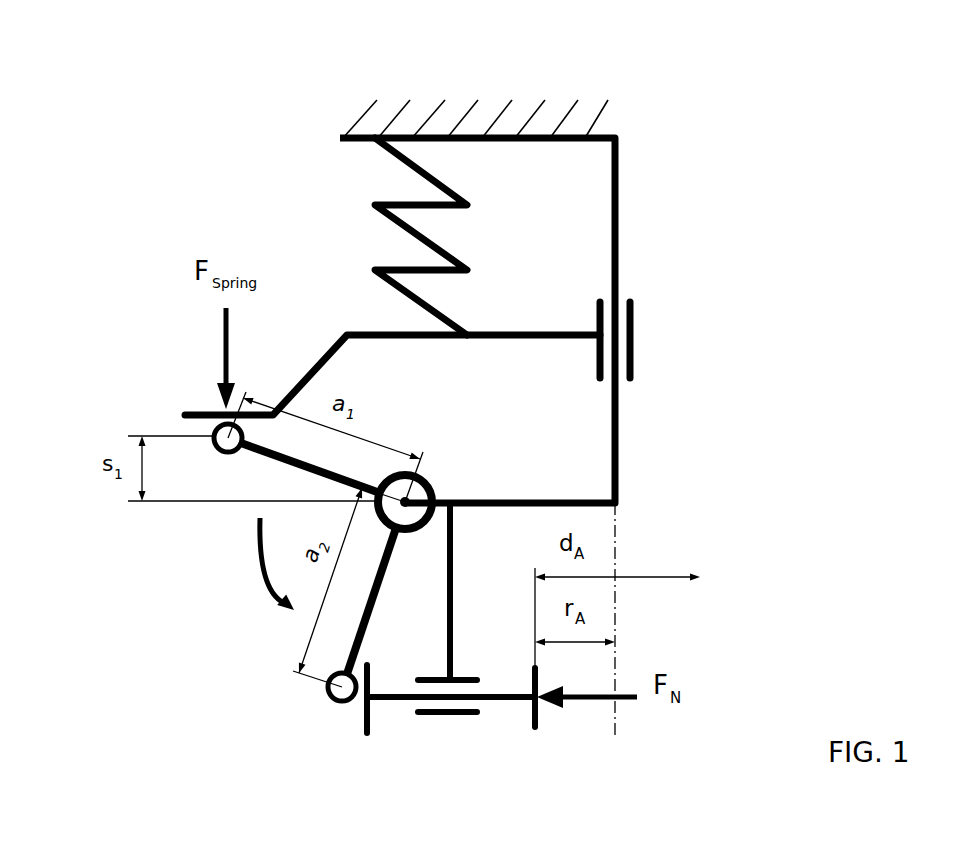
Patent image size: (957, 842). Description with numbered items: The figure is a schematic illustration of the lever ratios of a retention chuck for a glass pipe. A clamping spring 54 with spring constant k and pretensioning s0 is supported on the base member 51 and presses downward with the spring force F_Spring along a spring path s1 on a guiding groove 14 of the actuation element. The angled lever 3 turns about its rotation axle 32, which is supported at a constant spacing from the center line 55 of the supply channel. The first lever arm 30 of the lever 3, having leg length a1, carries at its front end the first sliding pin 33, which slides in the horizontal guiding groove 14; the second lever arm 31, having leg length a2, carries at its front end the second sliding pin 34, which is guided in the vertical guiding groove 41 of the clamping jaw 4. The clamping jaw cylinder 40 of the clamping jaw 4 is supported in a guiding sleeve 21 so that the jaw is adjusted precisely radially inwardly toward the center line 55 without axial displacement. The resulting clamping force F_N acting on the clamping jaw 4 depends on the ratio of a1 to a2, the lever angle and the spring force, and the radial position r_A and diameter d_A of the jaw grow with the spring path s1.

The angled lever 3 is at (326, 589).
The clamping jaw 4 is at (538, 710).
The guiding groove 14 is at (193, 410).
The guiding sleeve 21 is at (457, 720).
The first lever arm 30 is at (287, 465).
The second lever arm 31 is at (380, 563).
The rotation axle 32 is at (415, 492).
The first sliding pin 33 is at (222, 446).
The second sliding pin 34 is at (338, 692).
The clamping jaw cylinder 40 is at (495, 690).
The guiding groove 41 is at (372, 727).
The base member 51 is at (617, 202).
The clamping spring 54 is at (440, 180).
The center line 55 is at (617, 535).